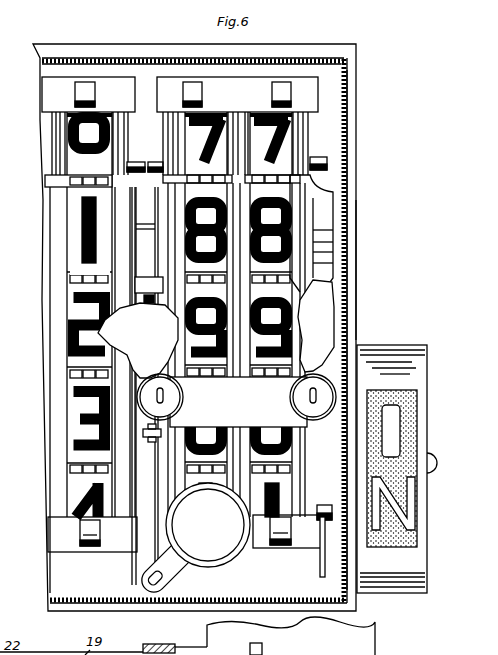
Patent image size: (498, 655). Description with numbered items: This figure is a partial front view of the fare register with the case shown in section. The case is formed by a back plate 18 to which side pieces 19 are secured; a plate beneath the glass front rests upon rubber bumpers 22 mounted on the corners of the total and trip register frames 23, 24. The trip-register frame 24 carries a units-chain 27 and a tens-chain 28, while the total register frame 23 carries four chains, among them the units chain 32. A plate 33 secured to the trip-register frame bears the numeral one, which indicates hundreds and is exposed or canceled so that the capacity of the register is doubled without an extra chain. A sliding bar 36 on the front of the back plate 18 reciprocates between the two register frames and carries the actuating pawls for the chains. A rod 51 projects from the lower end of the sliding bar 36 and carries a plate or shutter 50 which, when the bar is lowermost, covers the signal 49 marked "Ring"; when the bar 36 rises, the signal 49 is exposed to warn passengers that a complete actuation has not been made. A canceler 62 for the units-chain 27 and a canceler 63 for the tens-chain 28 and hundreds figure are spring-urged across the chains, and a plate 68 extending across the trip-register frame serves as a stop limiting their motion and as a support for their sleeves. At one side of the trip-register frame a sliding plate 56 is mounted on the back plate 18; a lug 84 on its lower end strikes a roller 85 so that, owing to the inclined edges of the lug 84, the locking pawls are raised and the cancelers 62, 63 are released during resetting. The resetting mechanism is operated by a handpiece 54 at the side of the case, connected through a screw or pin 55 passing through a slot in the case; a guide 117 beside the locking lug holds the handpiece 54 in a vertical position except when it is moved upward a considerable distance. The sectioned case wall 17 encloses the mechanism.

The casing 17 is at (325, 76).
The back plate 18 is at (350, 270).
The side pieces 19 is at (165, 58).
The rubber bumpers 22 is at (85, 84).
The total register frame 23 is at (42, 552).
The trip-register frame 24 is at (239, 312).
The units-chain 27 is at (271, 220).
The tens-chain 28 is at (206, 220).
The units chain of total register 32 is at (90, 279).
The plate 33 is at (149, 290).
The bar 36 is at (150, 476).
The signal 49 is at (229, 562).
The plate or shutter 50 is at (208, 525).
The rod 51 is at (162, 581).
The handpiece 54 is at (407, 377).
The screw or pin 55 is at (437, 462).
The sliding plate 56 is at (327, 212).
The canceler 62 is at (313, 350).
The canceler 63 is at (140, 361).
The plate 68 is at (238, 402).
The lug 84 is at (324, 560).
The roller 85 is at (322, 521).
The guide 117 is at (362, 565).